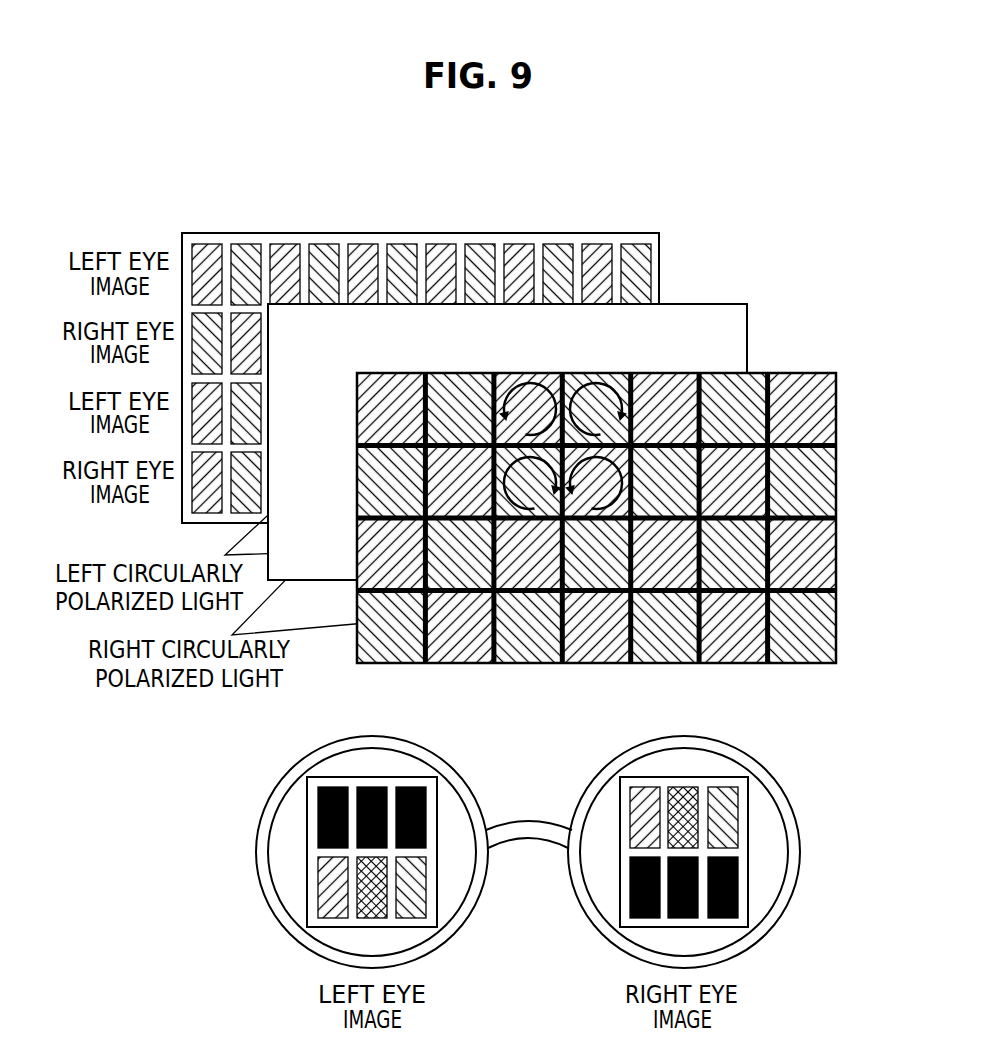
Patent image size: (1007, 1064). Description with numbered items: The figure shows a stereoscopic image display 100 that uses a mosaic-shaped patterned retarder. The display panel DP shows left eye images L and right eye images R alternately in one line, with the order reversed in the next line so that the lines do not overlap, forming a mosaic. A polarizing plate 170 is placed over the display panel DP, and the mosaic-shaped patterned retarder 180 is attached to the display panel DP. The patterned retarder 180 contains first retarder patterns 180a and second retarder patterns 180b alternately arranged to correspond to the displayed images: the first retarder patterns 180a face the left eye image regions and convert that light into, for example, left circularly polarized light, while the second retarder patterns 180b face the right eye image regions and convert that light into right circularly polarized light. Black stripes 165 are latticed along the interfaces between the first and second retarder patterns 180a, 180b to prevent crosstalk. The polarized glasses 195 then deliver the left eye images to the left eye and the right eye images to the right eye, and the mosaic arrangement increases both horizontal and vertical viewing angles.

The stereoscopic image display 100 is at (236, 182).
The display panel DP is at (620, 233).
The polarizing plate 170 is at (706, 304).
The patterned retarder 180 is at (626, 483).
The first retarder patterns 180a is at (386, 373).
The second retarder patterns 180b is at (450, 373).
The black stripes 165 is at (818, 444).
The polarized glasses 195 is at (802, 847).